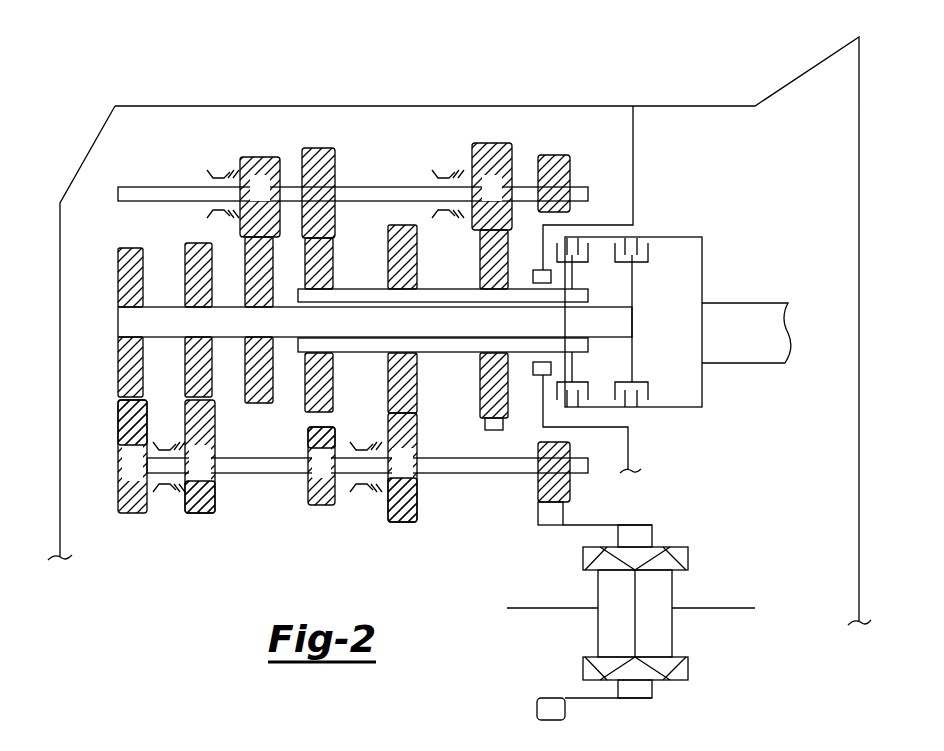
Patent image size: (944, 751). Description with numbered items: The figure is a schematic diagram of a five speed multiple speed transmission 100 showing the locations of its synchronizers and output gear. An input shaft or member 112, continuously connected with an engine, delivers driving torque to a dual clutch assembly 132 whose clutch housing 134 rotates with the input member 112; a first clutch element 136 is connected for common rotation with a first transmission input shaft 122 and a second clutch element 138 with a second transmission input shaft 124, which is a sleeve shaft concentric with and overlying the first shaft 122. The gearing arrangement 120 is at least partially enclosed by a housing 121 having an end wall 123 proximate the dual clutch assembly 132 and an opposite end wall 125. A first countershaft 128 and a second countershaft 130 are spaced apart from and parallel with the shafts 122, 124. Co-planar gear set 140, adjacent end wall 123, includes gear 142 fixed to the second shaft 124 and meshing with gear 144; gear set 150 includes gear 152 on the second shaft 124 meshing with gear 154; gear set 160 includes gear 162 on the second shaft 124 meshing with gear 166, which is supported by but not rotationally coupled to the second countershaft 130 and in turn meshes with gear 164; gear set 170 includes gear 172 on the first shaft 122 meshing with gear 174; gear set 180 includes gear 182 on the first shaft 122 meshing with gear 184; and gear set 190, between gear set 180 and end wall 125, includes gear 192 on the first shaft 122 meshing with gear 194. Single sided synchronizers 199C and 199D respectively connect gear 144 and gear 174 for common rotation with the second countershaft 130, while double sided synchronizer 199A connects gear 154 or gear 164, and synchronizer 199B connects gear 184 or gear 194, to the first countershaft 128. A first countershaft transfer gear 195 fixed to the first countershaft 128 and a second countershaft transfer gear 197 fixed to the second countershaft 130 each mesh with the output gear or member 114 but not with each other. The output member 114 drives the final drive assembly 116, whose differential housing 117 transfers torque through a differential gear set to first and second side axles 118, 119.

The multiple speed transmission 100 is at (715, 55).
The input shaft 112 is at (740, 310).
The output gear 114 is at (583, 502).
The final drive assembly 116 is at (710, 515).
The differential housing 117 is at (652, 690).
The first side axle 118 is at (735, 608).
The second side axle 119 is at (540, 608).
The gearing arrangement 120 is at (125, 158).
The housing 121 is at (655, 106).
The first transmission input shaft 122 is at (617, 305).
The end wall 123 is at (633, 155).
The second transmission input shaft 124 is at (452, 289).
The end wall 125 is at (60, 233).
The first countershaft 128 is at (512, 473).
The second countershaft 130 is at (385, 187).
The dual clutch assembly 132 is at (710, 200).
The clutch housing 134 is at (702, 400).
The first clutch element 136 is at (636, 370).
The second clutch element 138 is at (573, 368).
The co-planar gear set 140 is at (477, 259).
The gear 142 is at (487, 420).
The gear 144 is at (500, 143).
The co-planar gear set 150 is at (433, 490).
The gear 152 is at (413, 380).
The gear 154 is at (417, 502).
The co-planar gear set 160 is at (338, 487).
The gear 162 is at (337, 260).
The gear 164 is at (338, 430).
The gear 166 is at (335, 172).
The co-planar gear set 170 is at (272, 390).
The gear 172 is at (257, 400).
The gear 174 is at (268, 157).
The co-planar gear set 180 is at (230, 485).
The gear 182 is at (188, 263).
The gear 184 is at (215, 500).
The co-planar gear set 190 is at (112, 495).
The gear 192 is at (127, 273).
The gear 194 is at (127, 423).
The first countershaft transfer gear 195 is at (568, 488).
The second countershaft transfer gear 197 is at (560, 155).
The synchronizer assembly 199A is at (362, 490).
The synchronizer assembly 199B is at (165, 495).
The synchronizer assembly 199C is at (445, 165).
The synchronizer assembly 199D is at (215, 168).